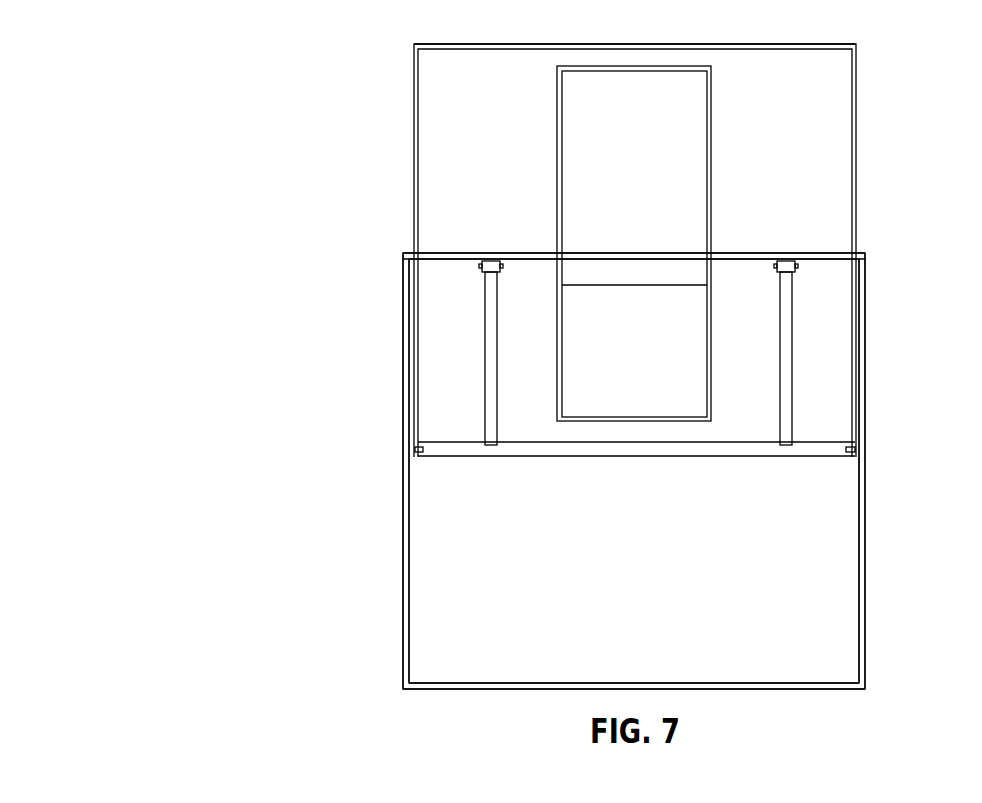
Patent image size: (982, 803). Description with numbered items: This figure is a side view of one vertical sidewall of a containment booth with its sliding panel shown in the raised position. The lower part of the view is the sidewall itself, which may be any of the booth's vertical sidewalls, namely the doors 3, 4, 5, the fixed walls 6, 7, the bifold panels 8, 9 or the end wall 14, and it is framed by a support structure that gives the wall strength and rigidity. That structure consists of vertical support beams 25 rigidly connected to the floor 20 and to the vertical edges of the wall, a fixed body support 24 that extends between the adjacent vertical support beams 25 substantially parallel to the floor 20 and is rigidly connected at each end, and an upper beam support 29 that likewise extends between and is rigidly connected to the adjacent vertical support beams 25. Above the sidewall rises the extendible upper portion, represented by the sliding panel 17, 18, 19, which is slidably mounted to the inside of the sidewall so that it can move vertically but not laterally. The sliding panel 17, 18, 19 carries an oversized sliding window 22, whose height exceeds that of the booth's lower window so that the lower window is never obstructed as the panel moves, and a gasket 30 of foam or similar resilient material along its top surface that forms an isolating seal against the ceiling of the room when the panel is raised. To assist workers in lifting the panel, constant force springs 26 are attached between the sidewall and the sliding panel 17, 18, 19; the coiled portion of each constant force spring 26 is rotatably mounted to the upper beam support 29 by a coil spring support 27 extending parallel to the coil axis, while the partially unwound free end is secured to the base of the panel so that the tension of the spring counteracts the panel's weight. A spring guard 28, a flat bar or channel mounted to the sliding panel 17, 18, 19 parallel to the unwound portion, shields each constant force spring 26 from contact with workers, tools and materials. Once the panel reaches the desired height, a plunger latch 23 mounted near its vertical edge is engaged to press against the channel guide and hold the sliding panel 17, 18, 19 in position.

The gasket 30 is at (782, 42).
The oversized sliding window 22 is at (557, 122).
The sliding panel 17 is at (562, 250).
The secondary sliding panel 18 is at (635, 250).
The end wall sliding panel 19 is at (448, 175).
The spring guard 28 is at (492, 262).
The coil spring support 27 is at (481, 266).
The constant force spring 26 is at (492, 378).
The upper beam support 29 is at (816, 252).
The plunger latch 23 is at (417, 448).
The door 3 is at (539, 471).
The door 4 is at (634, 471).
The door 5 is at (634, 471).
The fixed wall 6 is at (634, 471).
The fixed wall 7 is at (634, 471).
The bifold panel 8 is at (634, 471).
The bifold panel 9 is at (634, 471).
The end wall 14 is at (450, 510).
The vertical support beam 25 is at (403, 585).
The floor 20 is at (803, 683).
The fixed body support 24 is at (756, 687).